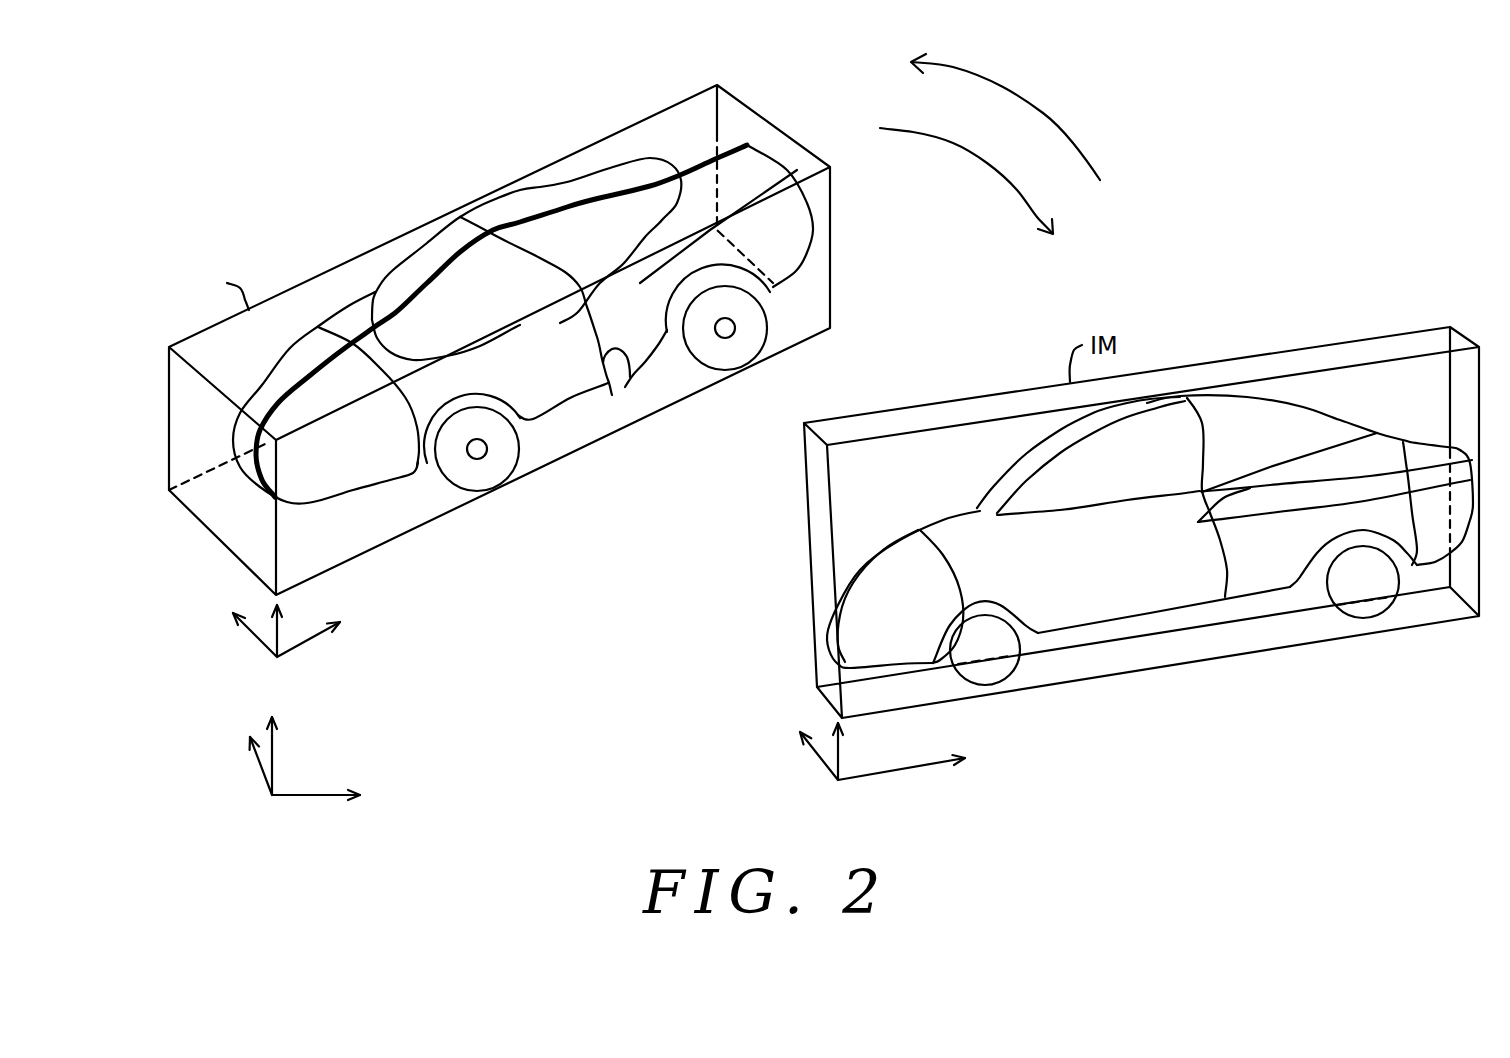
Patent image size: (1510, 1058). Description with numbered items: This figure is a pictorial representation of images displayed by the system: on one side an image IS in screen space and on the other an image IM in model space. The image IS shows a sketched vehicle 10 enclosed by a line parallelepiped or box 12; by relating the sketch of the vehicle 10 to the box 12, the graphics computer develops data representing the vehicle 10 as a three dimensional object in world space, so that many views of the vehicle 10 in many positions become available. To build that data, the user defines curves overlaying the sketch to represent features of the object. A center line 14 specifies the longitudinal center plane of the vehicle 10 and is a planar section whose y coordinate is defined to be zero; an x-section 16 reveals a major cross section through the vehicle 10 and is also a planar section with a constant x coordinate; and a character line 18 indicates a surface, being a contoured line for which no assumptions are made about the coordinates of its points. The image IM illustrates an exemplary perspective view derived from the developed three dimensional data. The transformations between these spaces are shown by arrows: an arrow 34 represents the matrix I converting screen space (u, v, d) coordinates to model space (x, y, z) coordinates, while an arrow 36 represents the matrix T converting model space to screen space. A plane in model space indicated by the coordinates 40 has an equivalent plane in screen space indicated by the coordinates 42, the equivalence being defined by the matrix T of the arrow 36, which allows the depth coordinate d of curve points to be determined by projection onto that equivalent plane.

The vehicle 10 is at (552, 383).
The box 12 is at (397, 238).
The center line 14 is at (568, 205).
The x-section 16 is at (630, 377).
The character line 18 is at (767, 185).
The arrow 34 is at (1078, 148).
The arrow 36 is at (1031, 210).
The coordinates 40 is at (307, 645).
The coordinates 42 is at (310, 797).